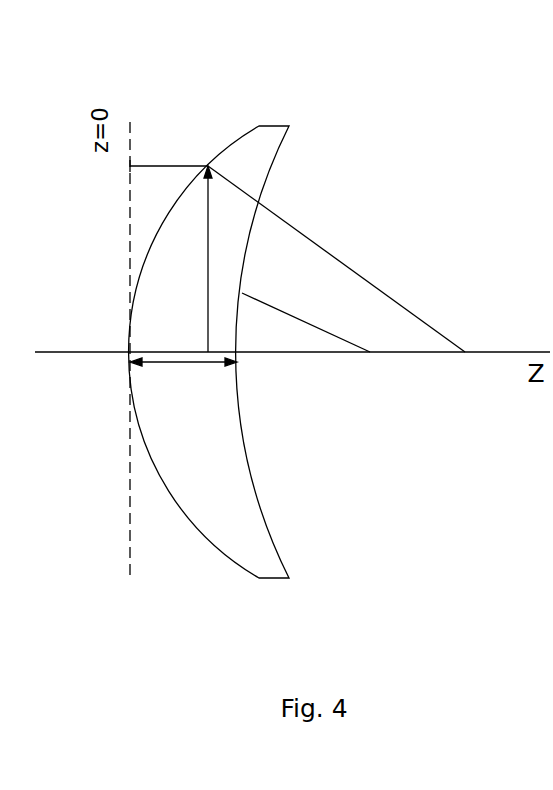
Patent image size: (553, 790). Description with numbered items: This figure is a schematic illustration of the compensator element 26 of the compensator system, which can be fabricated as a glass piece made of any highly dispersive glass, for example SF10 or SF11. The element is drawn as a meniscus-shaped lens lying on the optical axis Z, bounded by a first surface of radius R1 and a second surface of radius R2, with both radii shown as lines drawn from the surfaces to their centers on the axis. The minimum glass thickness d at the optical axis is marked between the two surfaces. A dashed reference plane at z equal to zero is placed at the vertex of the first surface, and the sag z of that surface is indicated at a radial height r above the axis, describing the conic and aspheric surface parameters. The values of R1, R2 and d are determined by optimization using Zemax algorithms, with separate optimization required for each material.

The compensator element 26 is at (277, 126).
The surface sag distance from z=0 plane z is at (169, 151).
The radial height from optical axis r is at (199, 259).
The minimum glass thickness d is at (183, 380).
The radius of first surface R1 is at (336, 259).
The radius of second surface R2 is at (306, 317).